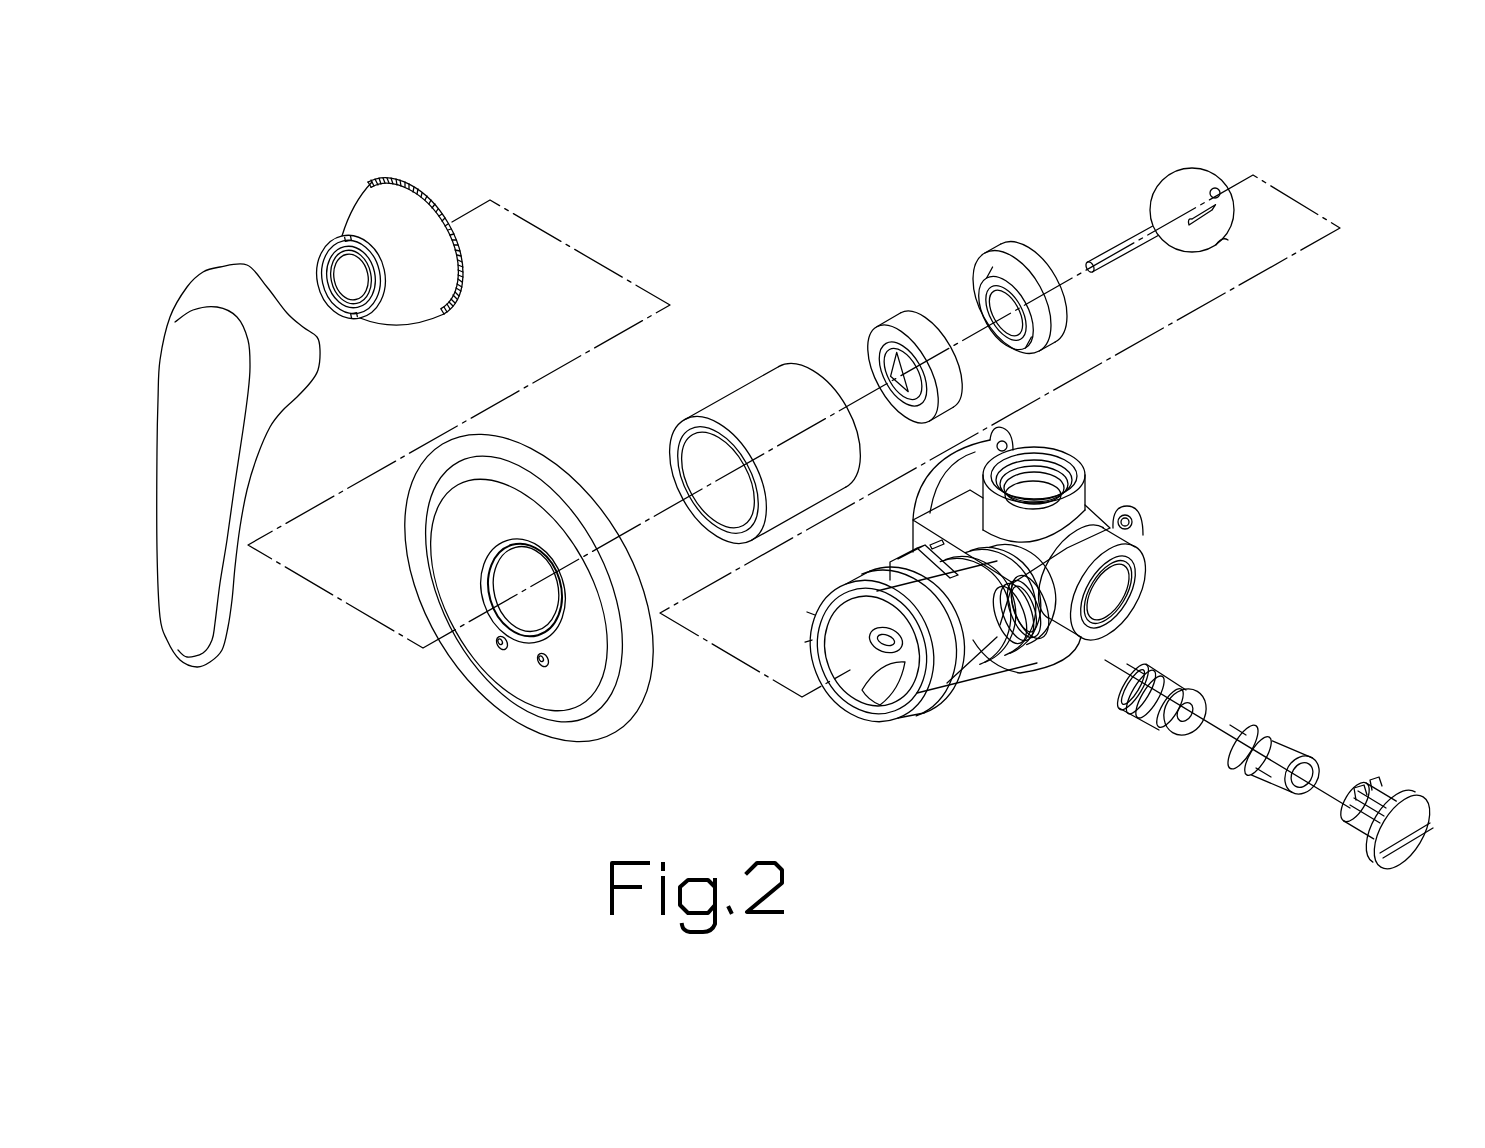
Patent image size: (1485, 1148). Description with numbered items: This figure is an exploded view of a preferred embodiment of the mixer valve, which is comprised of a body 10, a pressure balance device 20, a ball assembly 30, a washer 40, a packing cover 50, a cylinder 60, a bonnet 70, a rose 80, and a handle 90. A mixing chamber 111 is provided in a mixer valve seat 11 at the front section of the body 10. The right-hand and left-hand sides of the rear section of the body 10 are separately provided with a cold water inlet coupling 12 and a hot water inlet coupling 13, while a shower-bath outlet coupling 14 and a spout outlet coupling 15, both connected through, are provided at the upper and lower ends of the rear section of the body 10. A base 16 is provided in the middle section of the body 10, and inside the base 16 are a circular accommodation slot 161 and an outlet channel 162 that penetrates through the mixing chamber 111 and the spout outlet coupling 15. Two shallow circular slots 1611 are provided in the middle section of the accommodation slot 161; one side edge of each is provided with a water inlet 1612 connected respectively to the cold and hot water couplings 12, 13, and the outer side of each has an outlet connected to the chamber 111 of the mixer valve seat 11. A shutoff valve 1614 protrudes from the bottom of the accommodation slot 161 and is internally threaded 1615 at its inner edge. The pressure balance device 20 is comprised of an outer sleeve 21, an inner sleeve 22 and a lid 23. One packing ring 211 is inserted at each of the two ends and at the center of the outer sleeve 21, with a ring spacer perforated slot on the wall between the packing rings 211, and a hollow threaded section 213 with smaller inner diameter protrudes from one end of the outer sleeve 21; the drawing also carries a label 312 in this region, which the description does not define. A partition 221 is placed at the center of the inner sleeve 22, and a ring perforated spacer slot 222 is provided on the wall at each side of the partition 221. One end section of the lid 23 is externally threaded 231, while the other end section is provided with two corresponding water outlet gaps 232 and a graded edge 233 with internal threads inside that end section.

The body 10 is at (1060, 606).
The mixer valve seat 11 is at (943, 690).
The mixing chamber 111 is at (890, 713).
The cold water inlet coupling 12 is at (1008, 432).
The hot water inlet coupling 13 is at (1147, 566).
The shower-bath outlet coupling 14 is at (1062, 443).
The spout outlet coupling 15 is at (1038, 662).
The base 16 is at (951, 648).
The circular accommodation slot 161 is at (880, 566).
The shallow circular slots 1611 is at (1007, 620).
The water inlet 1612 is at (937, 548).
The shutoff valve 1614 is at (905, 567).
The internal threads 1615 is at (1073, 640).
The outlet channel 162 is at (868, 700).
The pressure balance device 20 is at (1286, 738).
The outer sleeve 21 is at (1187, 704).
The packing ring 211 is at (1160, 685).
The hollow threaded section 213 is at (1195, 700).
The seat ring 312 is at (1162, 672).
The inner sleeve 22 is at (1272, 740).
The partition 221 is at (1272, 755).
The ring perforated spacer slot 222 is at (1262, 740).
The lid 23 is at (1379, 783).
The external threads 231 is at (1378, 812).
The water outlet gaps 232 is at (1350, 820).
The graded edge 233 is at (1355, 795).
The ball assembly 30 is at (1148, 203).
The washer 40 is at (998, 253).
The packing cover 50 is at (888, 315).
The cylinder 60 is at (718, 410).
The bonnet 70 is at (425, 324).
The rose 80 is at (551, 437).
The handle 90 is at (229, 258).